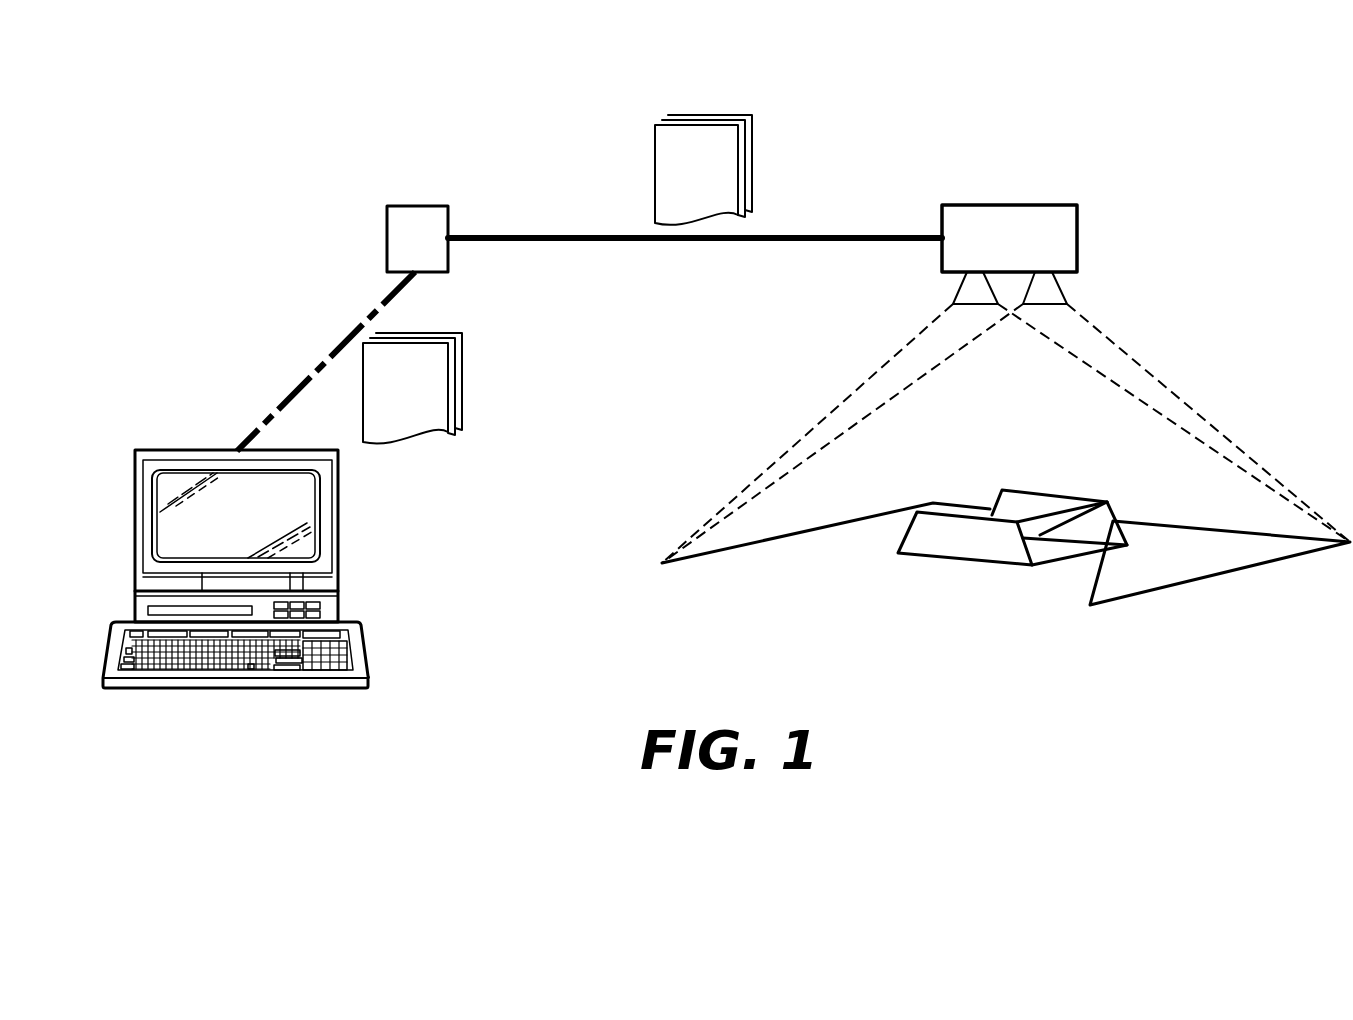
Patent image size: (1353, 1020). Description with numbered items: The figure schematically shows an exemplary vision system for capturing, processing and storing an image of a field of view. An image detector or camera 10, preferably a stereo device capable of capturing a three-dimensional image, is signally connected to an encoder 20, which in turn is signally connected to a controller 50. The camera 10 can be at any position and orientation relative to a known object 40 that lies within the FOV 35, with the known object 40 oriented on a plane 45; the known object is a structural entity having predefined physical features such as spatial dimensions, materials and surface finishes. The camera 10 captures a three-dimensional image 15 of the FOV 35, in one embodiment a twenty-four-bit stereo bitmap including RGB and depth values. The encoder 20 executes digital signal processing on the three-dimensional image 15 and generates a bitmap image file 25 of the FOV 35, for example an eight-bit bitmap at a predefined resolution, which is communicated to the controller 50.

The image detector (camera) 10 is at (994, 253).
The 3D image 15 is at (681, 190).
The encoder 20 is at (402, 253).
The bitmap image file 25 is at (389, 408).
The field of view (FOV) 35 is at (1175, 395).
The known object 40 is at (950, 538).
The plane 45 is at (780, 558).
The controller 50 is at (219, 530).